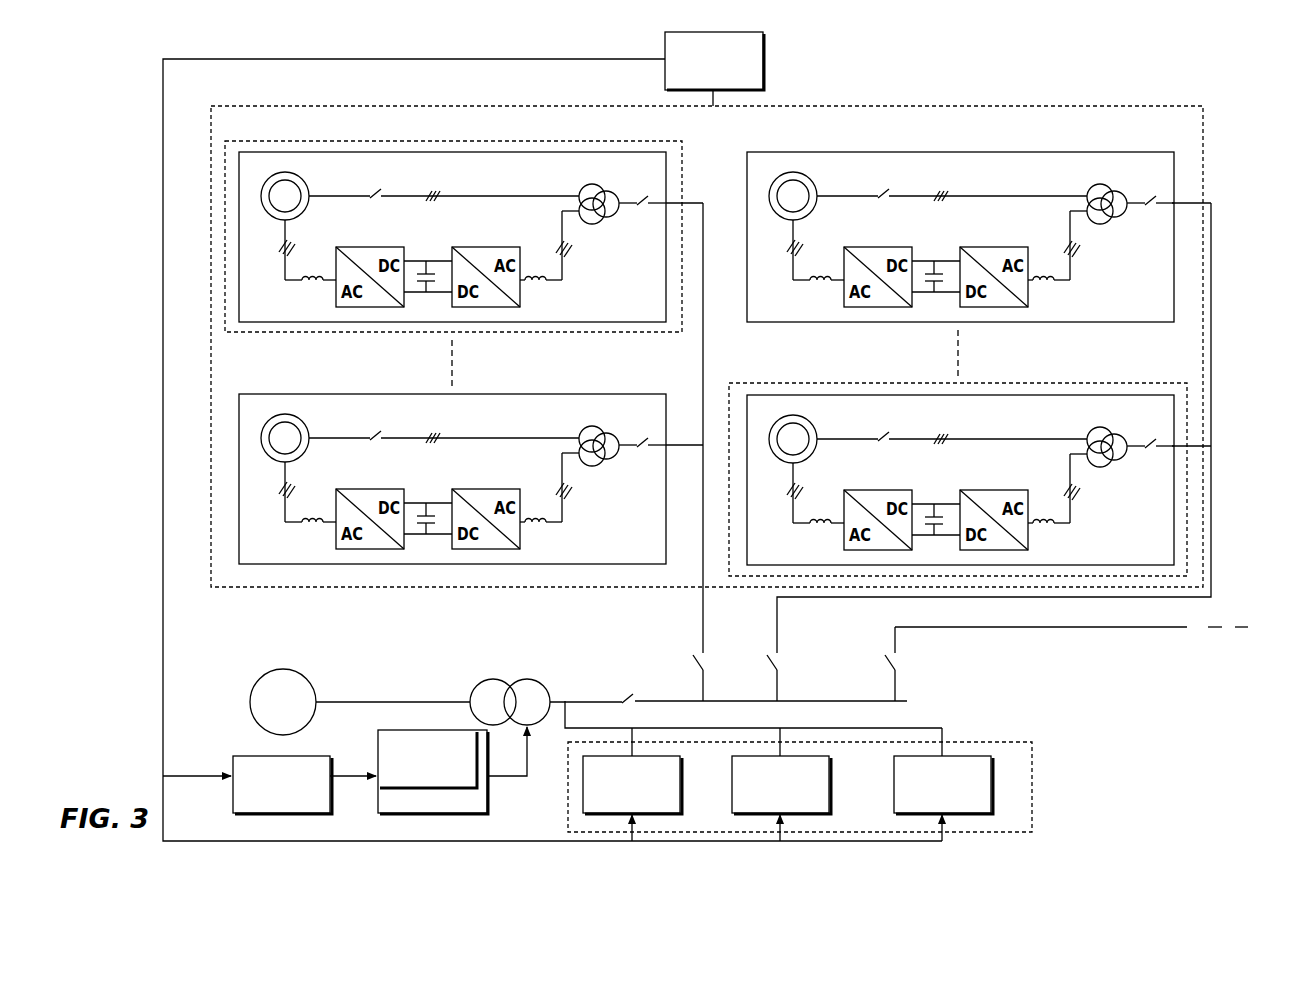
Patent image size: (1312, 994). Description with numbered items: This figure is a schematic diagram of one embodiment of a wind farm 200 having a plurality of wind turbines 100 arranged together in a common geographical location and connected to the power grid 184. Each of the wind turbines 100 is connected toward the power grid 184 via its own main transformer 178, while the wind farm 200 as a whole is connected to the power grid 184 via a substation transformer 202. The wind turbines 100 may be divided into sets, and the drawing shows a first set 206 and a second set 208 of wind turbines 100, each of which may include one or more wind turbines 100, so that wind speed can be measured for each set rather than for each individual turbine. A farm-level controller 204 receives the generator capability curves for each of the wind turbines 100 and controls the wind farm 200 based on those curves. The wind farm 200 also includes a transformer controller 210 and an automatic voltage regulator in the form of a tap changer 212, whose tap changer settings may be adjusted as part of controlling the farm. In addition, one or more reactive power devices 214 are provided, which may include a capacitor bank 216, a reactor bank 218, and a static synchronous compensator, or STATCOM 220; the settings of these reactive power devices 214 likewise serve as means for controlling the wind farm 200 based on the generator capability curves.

The wind turbine 100 is at (340, 149).
The main transformer 178 is at (590, 184).
The power grid 184 is at (298, 723).
The wind farm 200 is at (1247, 197).
The substation transformer 202 is at (530, 680).
The farm-level controller 204 is at (730, 72).
The first set of wind turbines 206 is at (225, 251).
The second set of wind turbines 208 is at (1083, 577).
The transformer controller 210 is at (298, 795).
The tap changer 212 is at (488, 784).
The reactive power device 214 is at (1033, 765).
The capacitor bank 216 is at (681, 774).
The reactor bank 218 is at (830, 774).
The static synchronous compensator (STATCOM) 220 is at (992, 774).